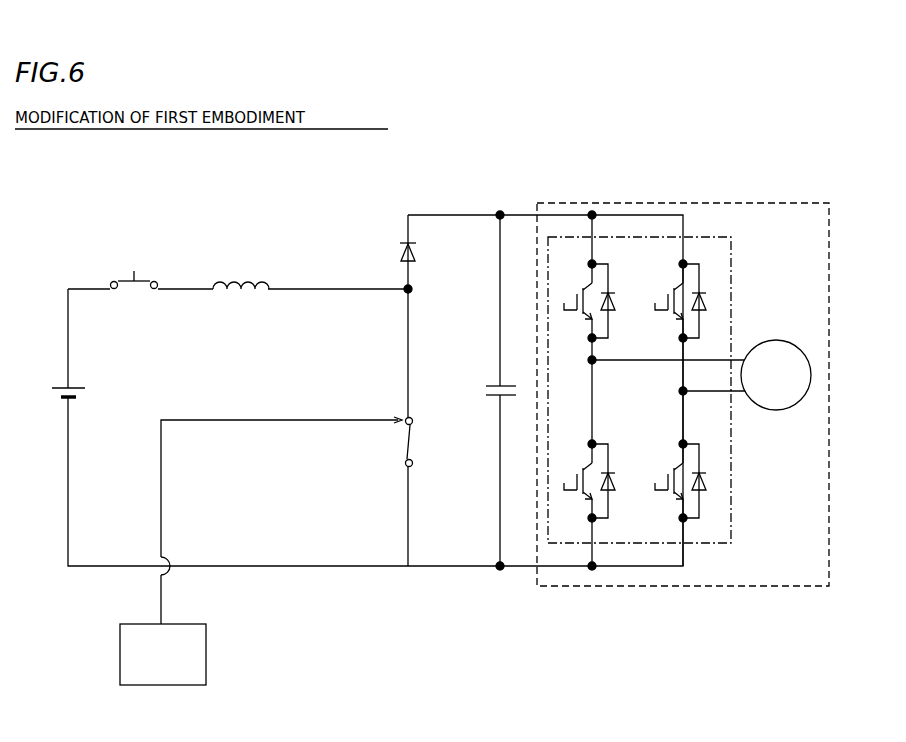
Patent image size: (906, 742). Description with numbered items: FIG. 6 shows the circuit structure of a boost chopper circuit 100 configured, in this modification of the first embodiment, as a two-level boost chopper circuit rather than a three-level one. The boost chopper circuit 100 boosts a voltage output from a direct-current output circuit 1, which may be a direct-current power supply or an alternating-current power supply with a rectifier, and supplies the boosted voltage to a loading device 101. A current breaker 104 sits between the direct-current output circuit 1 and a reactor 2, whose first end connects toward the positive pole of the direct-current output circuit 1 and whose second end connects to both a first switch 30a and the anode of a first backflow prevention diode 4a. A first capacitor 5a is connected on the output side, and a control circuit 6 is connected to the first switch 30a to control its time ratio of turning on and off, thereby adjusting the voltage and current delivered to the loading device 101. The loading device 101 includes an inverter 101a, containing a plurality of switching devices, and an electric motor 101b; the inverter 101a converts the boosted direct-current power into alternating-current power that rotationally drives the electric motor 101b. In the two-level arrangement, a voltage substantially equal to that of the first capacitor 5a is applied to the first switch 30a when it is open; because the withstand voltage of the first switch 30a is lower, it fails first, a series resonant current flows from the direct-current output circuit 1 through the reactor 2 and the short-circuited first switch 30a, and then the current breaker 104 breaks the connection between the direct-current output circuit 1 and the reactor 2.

The boost chopper circuit 100 is at (62, 222).
The direct-current output circuit 1 is at (57, 387).
The current breaker 104 is at (119, 281).
The reactor 2 is at (218, 285).
The first backflow prevention diode 4a is at (398, 254).
The first switch 30a is at (407, 441).
The first capacitor 5a is at (493, 386).
The control circuit 6 is at (119, 650).
The loading device 101 is at (616, 372).
The inverter 101a is at (732, 291).
The electric motor 101b is at (778, 331).